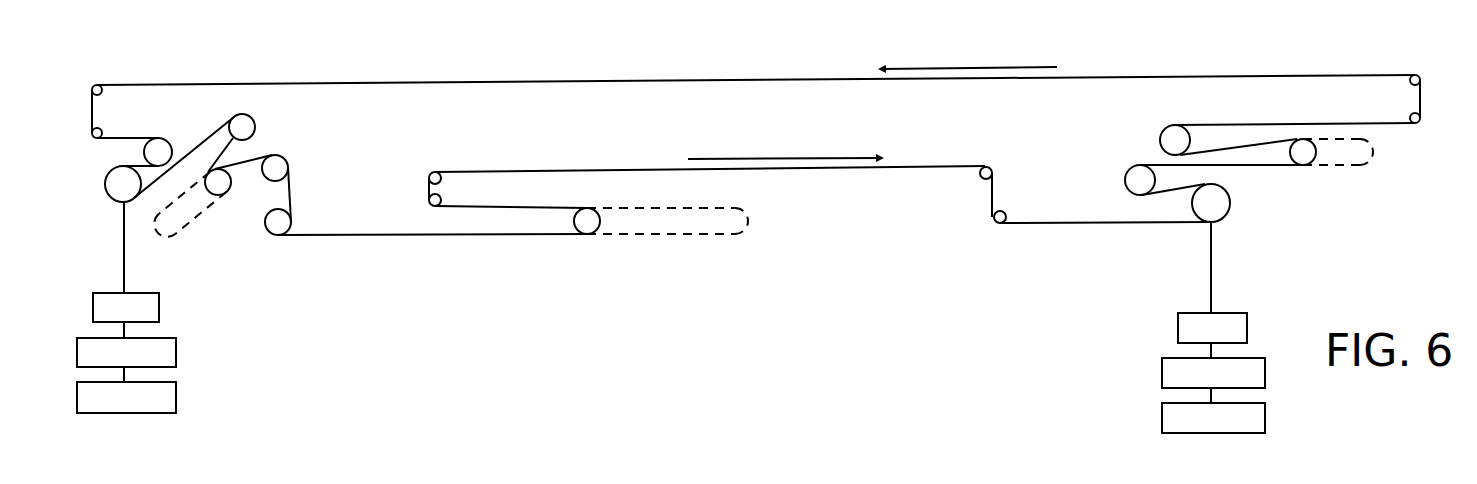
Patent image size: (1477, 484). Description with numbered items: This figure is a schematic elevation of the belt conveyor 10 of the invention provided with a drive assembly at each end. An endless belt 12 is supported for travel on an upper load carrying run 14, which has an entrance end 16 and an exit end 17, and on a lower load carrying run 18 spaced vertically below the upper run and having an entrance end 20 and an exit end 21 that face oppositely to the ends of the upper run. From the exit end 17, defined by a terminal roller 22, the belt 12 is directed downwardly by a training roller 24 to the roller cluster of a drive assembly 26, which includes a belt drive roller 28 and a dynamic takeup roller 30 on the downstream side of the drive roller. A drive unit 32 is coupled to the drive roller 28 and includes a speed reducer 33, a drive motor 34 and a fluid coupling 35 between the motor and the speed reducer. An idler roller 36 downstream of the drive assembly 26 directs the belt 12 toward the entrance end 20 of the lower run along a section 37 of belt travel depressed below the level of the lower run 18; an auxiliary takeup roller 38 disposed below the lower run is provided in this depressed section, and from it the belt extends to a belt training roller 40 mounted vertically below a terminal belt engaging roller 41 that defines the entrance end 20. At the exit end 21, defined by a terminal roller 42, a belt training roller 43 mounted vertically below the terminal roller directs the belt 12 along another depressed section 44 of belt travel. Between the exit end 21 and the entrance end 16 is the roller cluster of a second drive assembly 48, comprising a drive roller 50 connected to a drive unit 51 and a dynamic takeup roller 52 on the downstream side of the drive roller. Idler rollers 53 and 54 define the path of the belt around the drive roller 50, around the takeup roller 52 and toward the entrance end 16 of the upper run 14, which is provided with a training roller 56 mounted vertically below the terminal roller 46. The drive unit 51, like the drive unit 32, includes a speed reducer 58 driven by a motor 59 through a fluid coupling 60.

The belt conveyor 10 is at (826, 63).
The endless belt 12 is at (811, 79).
The upper load carrying run 14 is at (1120, 70).
The entrance end 16 is at (1410, 71).
The exit end 17 is at (101, 80).
The lower load carrying run 18 is at (662, 166).
The entrance end 20 is at (434, 170).
The exit end 21 is at (992, 164).
The terminal roller 22 is at (103, 91).
The training roller 24 is at (104, 134).
The drive assembly 26 is at (274, 135).
The belt drive roller 28 is at (113, 199).
The dynamic takeup roller 30 is at (231, 184).
The drive unit 32 is at (225, 331).
The speed reducer 33 is at (160, 312).
The drive motor 34 is at (177, 392).
The fluid coupling 35 is at (177, 352).
The idler roller 36 is at (292, 214).
The section of belt travel 37 is at (441, 240).
The auxiliary takeup roller 38 is at (573, 233).
The belt training roller 40 is at (428, 193).
The terminal belt engaging roller 41 is at (441, 181).
The terminal roller 42 is at (981, 178).
The belt training roller 43 is at (1005, 212).
The section of belt travel 44 is at (1121, 223).
The terminal roller 46 is at (1409, 82).
The second drive assembly 48 is at (1146, 145).
The drive roller 50 is at (1230, 212).
The drive unit 51 is at (1251, 294).
The dynamic takeup roller 52 is at (1299, 166).
The idler roller 53 is at (1126, 181).
The idler roller 54 is at (1165, 128).
The training roller 56 is at (1409, 118).
The speed reducer 58 is at (1178, 328).
The motor 59 is at (1162, 412).
The fluid coupling 60 is at (1162, 370).